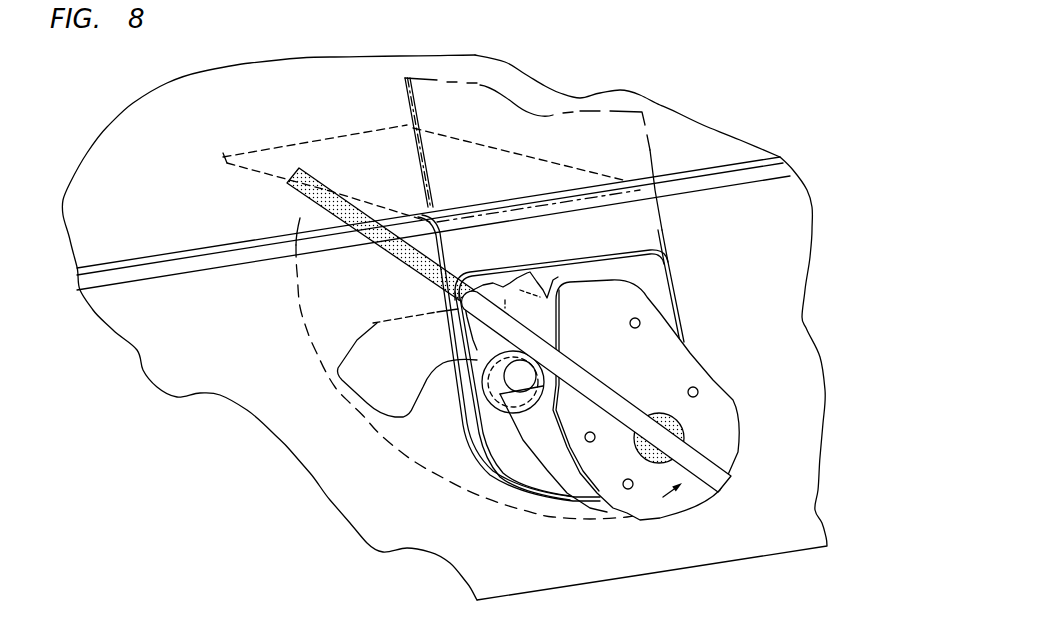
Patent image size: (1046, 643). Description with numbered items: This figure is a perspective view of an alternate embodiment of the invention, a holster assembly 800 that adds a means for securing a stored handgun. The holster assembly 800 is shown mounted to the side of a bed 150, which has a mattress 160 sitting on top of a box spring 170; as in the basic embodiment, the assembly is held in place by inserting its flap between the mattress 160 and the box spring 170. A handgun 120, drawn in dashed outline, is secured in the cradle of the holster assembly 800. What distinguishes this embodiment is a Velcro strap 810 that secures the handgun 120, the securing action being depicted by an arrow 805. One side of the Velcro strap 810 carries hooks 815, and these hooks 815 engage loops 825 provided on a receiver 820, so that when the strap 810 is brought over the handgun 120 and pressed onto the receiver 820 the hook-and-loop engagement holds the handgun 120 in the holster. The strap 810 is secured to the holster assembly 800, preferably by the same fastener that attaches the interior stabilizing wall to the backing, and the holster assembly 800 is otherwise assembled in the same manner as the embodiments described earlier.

The handgun 120 is at (397, 322).
The bed 150 is at (833, 177).
The mattress 160 is at (722, 136).
The box spring 170 is at (790, 338).
The holster assembly 800 is at (714, 310).
The arrow 805 is at (422, 467).
The Velcro strap 810 is at (727, 488).
The hooks 815 is at (307, 194).
The receiver 820 is at (686, 430).
The loops 825 is at (682, 418).